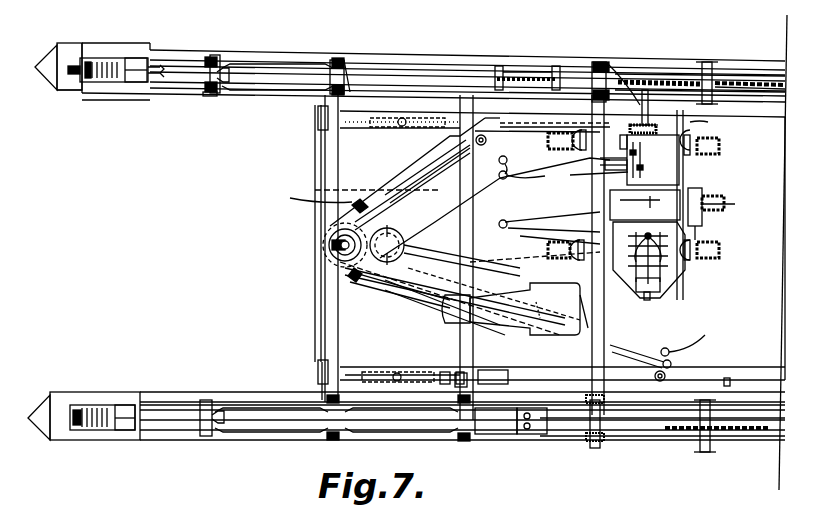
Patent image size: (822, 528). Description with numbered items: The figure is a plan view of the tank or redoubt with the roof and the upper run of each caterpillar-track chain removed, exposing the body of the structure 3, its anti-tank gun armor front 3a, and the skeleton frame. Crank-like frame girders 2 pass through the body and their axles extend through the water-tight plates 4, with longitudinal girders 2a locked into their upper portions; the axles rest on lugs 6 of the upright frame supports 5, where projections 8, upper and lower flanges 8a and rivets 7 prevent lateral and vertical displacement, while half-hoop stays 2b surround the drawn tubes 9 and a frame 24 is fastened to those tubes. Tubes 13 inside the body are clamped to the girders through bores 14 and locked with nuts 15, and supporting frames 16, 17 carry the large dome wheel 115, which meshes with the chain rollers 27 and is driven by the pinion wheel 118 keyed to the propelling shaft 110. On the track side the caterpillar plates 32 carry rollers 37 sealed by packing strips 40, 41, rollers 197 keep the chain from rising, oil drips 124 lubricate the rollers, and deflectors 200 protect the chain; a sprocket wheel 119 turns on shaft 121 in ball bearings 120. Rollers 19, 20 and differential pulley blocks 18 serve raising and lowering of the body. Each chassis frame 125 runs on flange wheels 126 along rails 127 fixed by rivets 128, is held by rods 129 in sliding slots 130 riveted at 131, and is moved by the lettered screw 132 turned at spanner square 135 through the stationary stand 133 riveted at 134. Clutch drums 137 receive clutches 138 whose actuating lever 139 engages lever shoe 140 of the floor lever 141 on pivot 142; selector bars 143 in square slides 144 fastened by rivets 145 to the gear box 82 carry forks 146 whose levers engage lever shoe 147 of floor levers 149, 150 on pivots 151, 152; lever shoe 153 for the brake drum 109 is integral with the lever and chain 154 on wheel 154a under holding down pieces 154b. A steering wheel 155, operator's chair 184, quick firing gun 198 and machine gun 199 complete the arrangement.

The anti tank gun deflectors 200 is at (48, 58).
The outside packing strip 40 is at (158, 48).
The inside packing strip 41 is at (166, 96).
The rollers 37 is at (88, 58).
The caterpillar plates 32 is at (72, 80).
The rollers 27 is at (78, 76).
The front semicircular frame 24 is at (138, 84).
The lugs or projections 8 is at (206, 58).
The upright frame supports 5 is at (214, 55).
The half-hoop upper and lower stays 2b is at (226, 62).
The water-tight plates 4 is at (278, 58).
The upper and lower flanges 8a is at (330, 60).
The rivets 7 is at (347, 60).
The drawn tubes 9 is at (420, 70).
The sprocket wheel 119 is at (505, 66).
The shaft of the sprocket wheel 121 is at (522, 68).
The ball bearings 120 is at (530, 76).
The propelling shaft 110 is at (618, 75).
The roller tooth driving pinion wheel 118 is at (645, 78).
The rollers 197 is at (707, 62).
The large dome wheel 115 is at (740, 78).
The perforations or bores 14 is at (768, 82).
The body of the structure 3 is at (380, 110).
The anti-tank gun armor front 3a is at (315, 145).
The frame girders 2 is at (339, 142).
The rollers 19 is at (318, 115).
The lugs 6 is at (320, 400).
The differential pulley blocks 18 is at (400, 127).
The longitudinally disposed girders 2a is at (435, 128).
The long floor lever and chain 154 is at (490, 114).
The wheel 154a is at (486, 141).
The holding down pieces 154b is at (740, 376).
The lever shoe 153 is at (598, 113).
The brake drum 109 is at (650, 125).
The gear box 82 is at (692, 129).
The flange wheels 126 is at (721, 138).
The rails 127 is at (715, 156).
The square slides 144 is at (649, 158).
The rivets or bolts 145 is at (654, 160).
The lever and gear moving fork 146 is at (658, 160).
The selector bars 143 is at (605, 161).
The lever shoe 147 is at (598, 177).
The stationary stand 133 is at (702, 193).
The spanner square 135 is at (726, 201).
The rivets 134 is at (727, 207).
The lettered screw 132 is at (702, 227).
The lever shoe 140 is at (612, 203).
The rivets 128 is at (718, 254).
The pivot 142 is at (532, 227).
The chassis frame 125 is at (640, 293).
The long floor lever 150 is at (745, 316).
The long floor lever 149 is at (439, 204).
The machine gun 199 is at (312, 189).
The steering wheel 155 is at (320, 265).
The chair 184 is at (387, 245).
The long floor lever 141 is at (432, 225).
The rollers 20 is at (502, 195).
The pivot 152 is at (507, 175).
The pivot 151 is at (510, 181).
The actuating lever 139 is at (555, 217).
The rivets 131 is at (554, 226).
The clutch drums 137 is at (598, 227).
The clutches 138 is at (580, 243).
The sliding slots 130 is at (535, 260).
The holding down rods 129 is at (580, 254).
The quick firing gun 198 is at (515, 309).
The nuts 15 is at (447, 371).
The tubes 13 is at (505, 371).
The automatic oil drips 124 is at (530, 434).
The supporting frame 17 is at (598, 426).
The supporting frame 16 is at (658, 444).